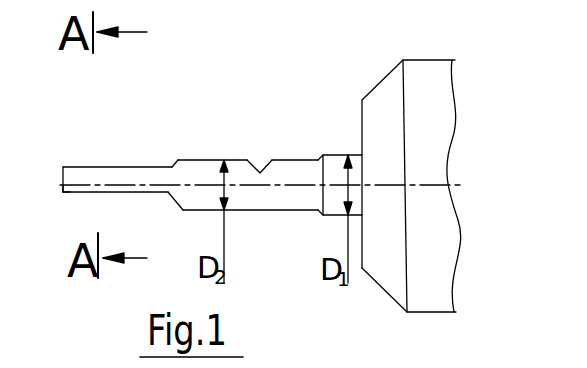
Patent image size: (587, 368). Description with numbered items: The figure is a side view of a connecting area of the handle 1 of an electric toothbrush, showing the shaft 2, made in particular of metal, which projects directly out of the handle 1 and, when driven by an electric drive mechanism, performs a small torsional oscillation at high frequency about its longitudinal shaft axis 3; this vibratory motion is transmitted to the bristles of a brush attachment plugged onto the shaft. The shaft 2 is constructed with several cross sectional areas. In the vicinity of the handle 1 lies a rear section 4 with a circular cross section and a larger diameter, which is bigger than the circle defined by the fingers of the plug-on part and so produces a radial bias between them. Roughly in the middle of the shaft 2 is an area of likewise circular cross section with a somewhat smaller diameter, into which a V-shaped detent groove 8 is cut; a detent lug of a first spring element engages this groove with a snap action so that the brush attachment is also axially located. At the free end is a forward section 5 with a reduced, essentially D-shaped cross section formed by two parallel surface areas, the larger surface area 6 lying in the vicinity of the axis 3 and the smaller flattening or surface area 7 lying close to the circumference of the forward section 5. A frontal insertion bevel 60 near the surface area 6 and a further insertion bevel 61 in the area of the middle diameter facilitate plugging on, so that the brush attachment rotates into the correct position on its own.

The handle 1 is at (378, 105).
The shaft 2 is at (238, 177).
The shaft axis 3 is at (140, 185).
The rear section 4 is at (332, 166).
The forward section 5 is at (187, 170).
The surface area 6 is at (67, 192).
The surface area 7 is at (80, 167).
The detent groove 8 is at (260, 171).
The frontal insertion bevel 60 is at (68, 191).
The insertion bevel 61 is at (172, 205).